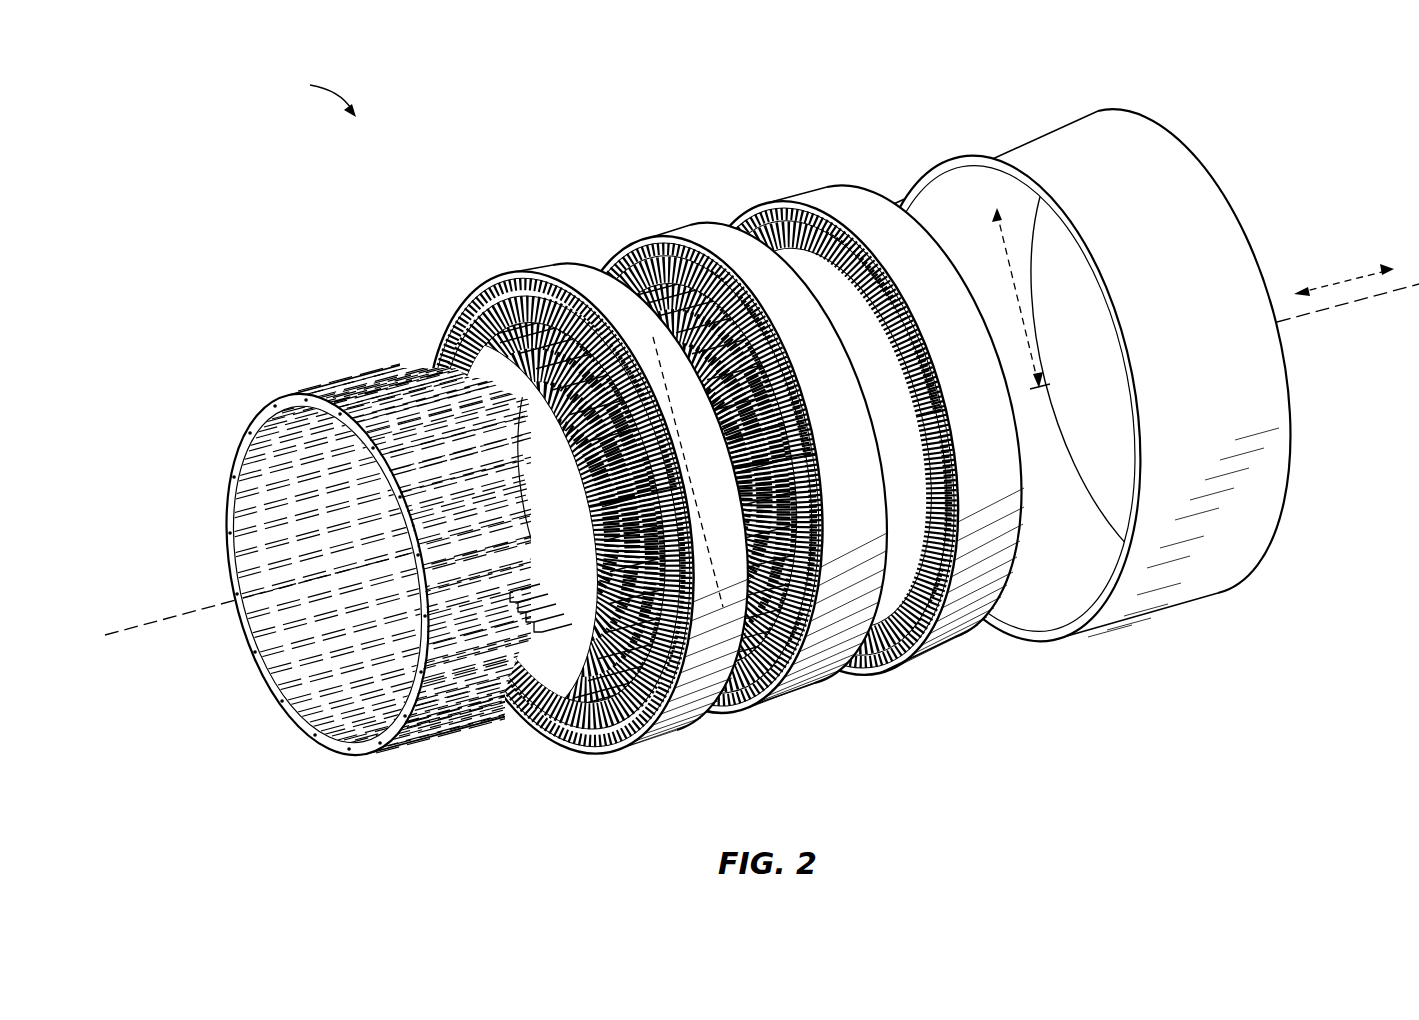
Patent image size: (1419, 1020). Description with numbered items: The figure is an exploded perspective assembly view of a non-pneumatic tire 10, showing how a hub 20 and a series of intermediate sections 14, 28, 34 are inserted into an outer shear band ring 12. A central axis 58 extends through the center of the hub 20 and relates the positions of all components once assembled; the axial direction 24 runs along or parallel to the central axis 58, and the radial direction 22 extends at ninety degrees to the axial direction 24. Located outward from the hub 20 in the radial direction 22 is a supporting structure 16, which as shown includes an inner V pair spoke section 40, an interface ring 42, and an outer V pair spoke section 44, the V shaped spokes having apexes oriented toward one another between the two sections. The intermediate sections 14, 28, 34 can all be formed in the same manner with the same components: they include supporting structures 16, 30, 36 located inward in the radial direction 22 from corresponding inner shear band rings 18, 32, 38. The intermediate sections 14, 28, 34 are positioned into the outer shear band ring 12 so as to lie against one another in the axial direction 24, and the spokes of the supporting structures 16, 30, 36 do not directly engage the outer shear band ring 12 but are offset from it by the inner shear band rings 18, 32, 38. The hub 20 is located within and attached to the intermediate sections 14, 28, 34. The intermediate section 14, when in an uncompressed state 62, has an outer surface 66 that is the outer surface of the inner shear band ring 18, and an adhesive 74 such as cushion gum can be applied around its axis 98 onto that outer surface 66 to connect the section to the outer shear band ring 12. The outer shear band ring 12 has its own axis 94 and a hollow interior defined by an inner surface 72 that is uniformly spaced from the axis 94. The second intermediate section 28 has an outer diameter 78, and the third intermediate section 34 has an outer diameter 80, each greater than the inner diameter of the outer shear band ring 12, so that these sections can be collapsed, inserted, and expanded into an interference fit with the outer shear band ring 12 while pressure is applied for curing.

The non-pneumatic tire 10 is at (314, 94).
The outer shear band ring 12 is at (1114, 380).
The intermediate section 14 is at (552, 508).
The supporting structure 16 is at (530, 718).
The inner shear band ring 18 is at (629, 508).
The hub 20 is at (457, 544).
The radial direction 22 is at (1032, 345).
The axial direction 24 is at (1348, 280).
The second intermediate section 28 is at (721, 708).
The supporting structure 30 is at (690, 466).
The inner shear band ring 32 is at (812, 690).
The third intermediate section 34 is at (834, 450).
The supporting structure 36 is at (858, 678).
The inner shear band ring 38 is at (965, 633).
The inner V pair spoke section 40 is at (567, 648).
The interface ring 42 is at (437, 345).
The outer V pair spoke section 44 is at (578, 742).
The central axis 58 is at (155, 625).
The uncompressed state 62 is at (458, 252).
The outer surface 66 is at (645, 757).
The inner surface 72 is at (1052, 515).
The adhesive 74 is at (541, 266).
The outer diameter 78 is at (660, 378).
The outer diameter 80 is at (810, 372).
The axis 94 is at (1057, 382).
The axis 98 is at (535, 528).